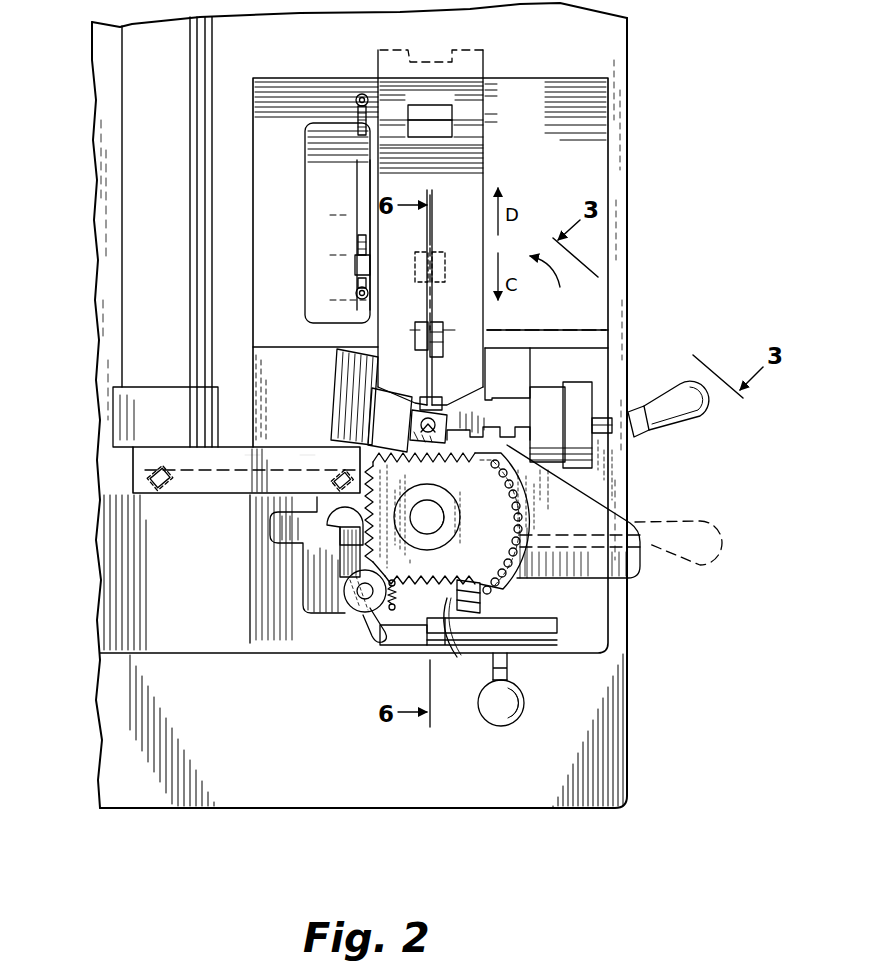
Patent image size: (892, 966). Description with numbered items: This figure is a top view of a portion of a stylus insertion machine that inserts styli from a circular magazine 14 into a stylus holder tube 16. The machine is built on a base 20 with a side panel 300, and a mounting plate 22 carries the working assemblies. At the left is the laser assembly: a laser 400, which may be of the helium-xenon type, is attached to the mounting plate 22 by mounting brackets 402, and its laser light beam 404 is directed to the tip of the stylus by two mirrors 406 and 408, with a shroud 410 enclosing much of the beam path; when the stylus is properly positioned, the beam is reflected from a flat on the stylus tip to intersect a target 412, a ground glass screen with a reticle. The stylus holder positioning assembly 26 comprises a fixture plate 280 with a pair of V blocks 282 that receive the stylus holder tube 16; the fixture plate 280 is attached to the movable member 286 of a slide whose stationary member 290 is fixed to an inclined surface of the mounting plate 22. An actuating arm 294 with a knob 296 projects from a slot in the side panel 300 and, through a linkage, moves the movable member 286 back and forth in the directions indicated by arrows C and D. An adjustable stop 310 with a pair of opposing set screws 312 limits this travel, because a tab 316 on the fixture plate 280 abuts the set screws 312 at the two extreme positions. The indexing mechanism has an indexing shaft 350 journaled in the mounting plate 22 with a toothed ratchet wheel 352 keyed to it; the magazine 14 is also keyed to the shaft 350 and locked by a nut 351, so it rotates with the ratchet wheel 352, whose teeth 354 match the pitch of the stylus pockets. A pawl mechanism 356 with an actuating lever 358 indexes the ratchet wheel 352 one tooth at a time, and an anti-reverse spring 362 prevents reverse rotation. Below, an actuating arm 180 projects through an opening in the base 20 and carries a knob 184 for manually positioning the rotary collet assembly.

The base 20 is at (628, 712).
The mounting plate 22 is at (628, 190).
The stylus holder positioning assembly 26 is at (552, 287).
The circular magazine 14 is at (496, 527).
The stylus holder tube 16 is at (436, 320).
The actuating arm 180 is at (512, 672).
The knob 184 is at (497, 718).
The fixture plate 280 is at (487, 176).
The V blocks 282 is at (428, 255).
The movable member 286 is at (487, 146).
The stationary member 290 is at (487, 106).
The actuating arm 294 is at (630, 434).
The knob 296 is at (708, 413).
The side panel 300 is at (512, 625).
The adjustable stop 310 is at (306, 200).
The set screws 312 is at (356, 100).
The tab 316 is at (356, 268).
The indexing shaft 350 is at (440, 527).
The nut 351 is at (475, 493).
The toothed ratchet wheel 352 is at (409, 448).
The teeth 354 is at (434, 598).
The pawl mechanism 356 is at (348, 560).
The actuating lever 358 is at (368, 628).
The anti-reverse spring 362 is at (458, 644).
The laser 400 is at (130, 290).
The mounting brackets 402 is at (118, 410).
The laser light beam 404 is at (225, 495).
The mirror 406 is at (165, 478).
The mirror 408 is at (350, 478).
The shroud 410 is at (160, 497).
The target 412 is at (602, 556).